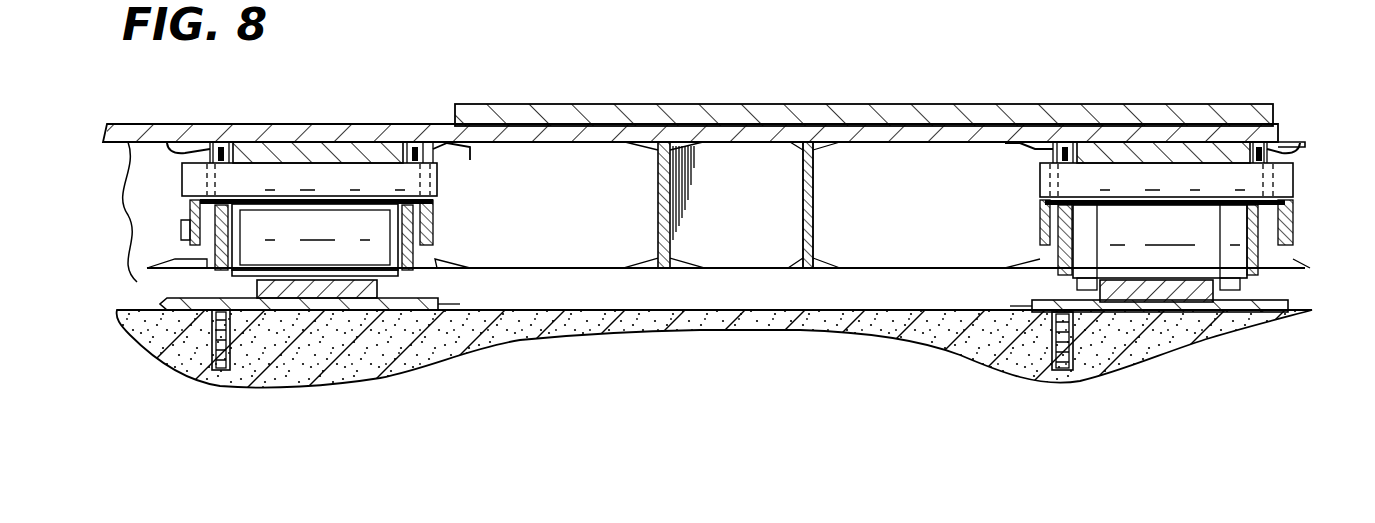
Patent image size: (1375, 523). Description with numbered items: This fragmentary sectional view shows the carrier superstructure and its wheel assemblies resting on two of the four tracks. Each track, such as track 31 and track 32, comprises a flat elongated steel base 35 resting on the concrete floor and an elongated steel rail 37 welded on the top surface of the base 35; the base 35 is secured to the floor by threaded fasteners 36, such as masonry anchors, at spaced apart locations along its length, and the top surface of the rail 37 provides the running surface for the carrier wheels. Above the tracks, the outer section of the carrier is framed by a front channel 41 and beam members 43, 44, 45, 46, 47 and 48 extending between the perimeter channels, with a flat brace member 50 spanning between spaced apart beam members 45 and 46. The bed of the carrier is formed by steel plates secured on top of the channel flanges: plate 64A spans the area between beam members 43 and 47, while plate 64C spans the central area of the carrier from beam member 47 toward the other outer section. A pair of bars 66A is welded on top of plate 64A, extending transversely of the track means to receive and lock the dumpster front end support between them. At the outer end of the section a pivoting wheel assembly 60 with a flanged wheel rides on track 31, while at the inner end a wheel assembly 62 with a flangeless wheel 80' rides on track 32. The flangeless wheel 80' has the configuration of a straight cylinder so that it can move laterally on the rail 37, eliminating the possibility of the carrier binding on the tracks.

The steel plate 64A is at (190, 73).
The steel plate 64C is at (290, 130).
The bar 66A is at (906, 64).
The beam member 43 is at (1290, 143).
The beam member 48 is at (186, 150).
The beam member 47 is at (448, 146).
The beam member 46 is at (696, 160).
The beam member 45 is at (805, 200).
The flat brace member 50 is at (760, 244).
The wheel assembly 62 is at (370, 222).
The wheel assembly 60 is at (1120, 217).
The beam member 44 is at (1020, 143).
The front channel 41 is at (148, 200).
The track 32 is at (180, 299).
The track 31 is at (1294, 302).
The rail 37 is at (382, 294).
The base 35 is at (445, 307).
The threaded fastener 36 is at (223, 362).
The flangeless wheel 80' is at (337, 303).